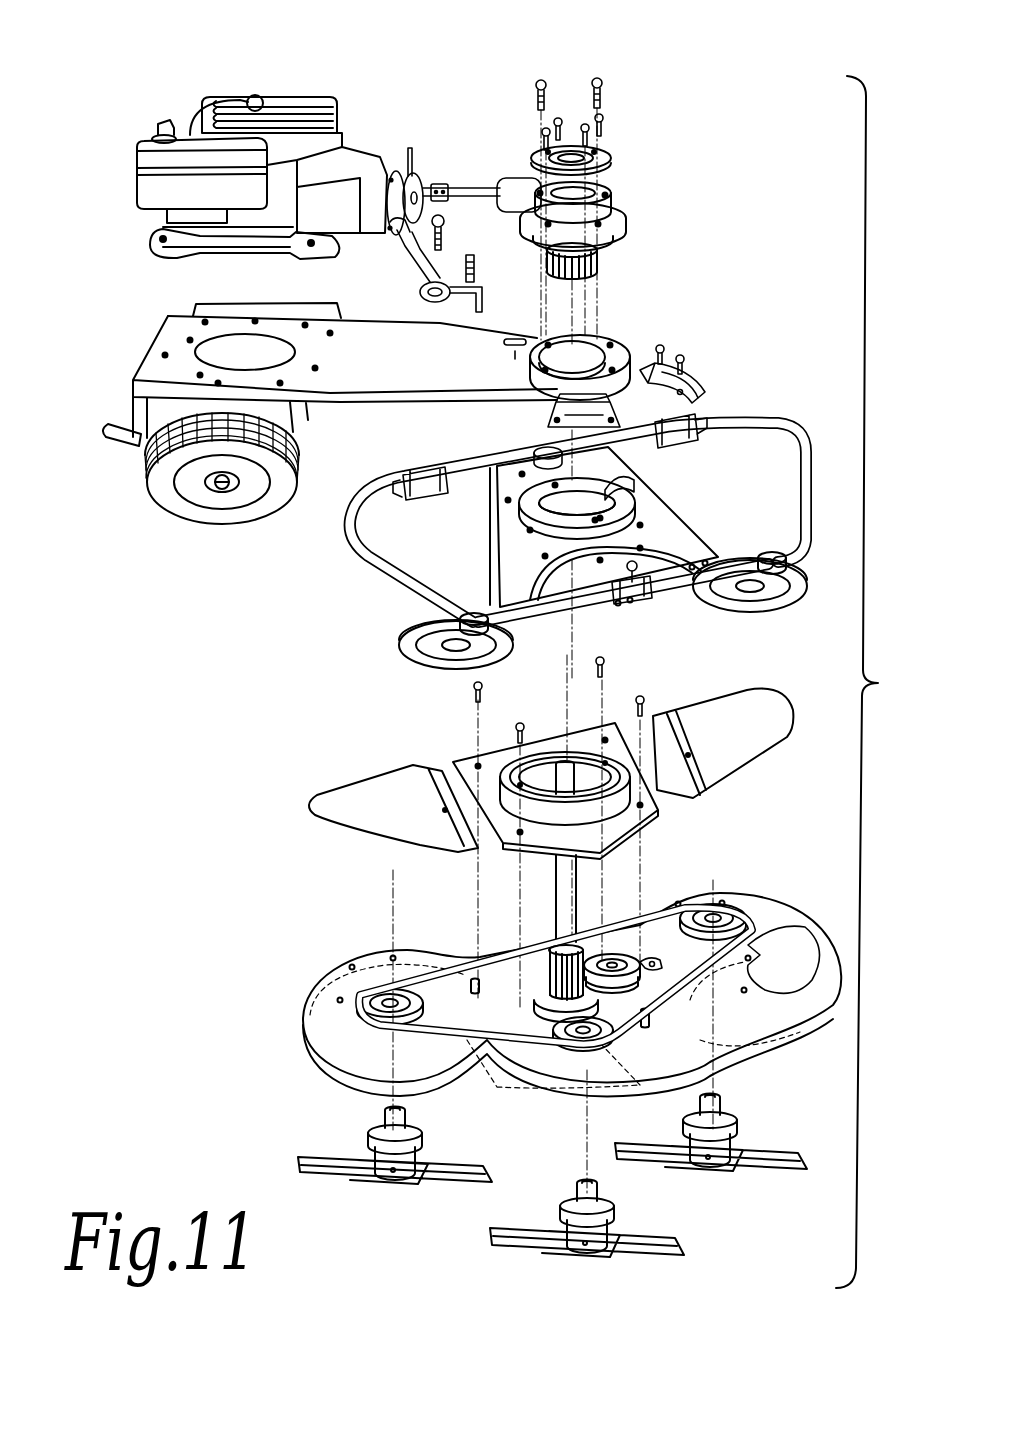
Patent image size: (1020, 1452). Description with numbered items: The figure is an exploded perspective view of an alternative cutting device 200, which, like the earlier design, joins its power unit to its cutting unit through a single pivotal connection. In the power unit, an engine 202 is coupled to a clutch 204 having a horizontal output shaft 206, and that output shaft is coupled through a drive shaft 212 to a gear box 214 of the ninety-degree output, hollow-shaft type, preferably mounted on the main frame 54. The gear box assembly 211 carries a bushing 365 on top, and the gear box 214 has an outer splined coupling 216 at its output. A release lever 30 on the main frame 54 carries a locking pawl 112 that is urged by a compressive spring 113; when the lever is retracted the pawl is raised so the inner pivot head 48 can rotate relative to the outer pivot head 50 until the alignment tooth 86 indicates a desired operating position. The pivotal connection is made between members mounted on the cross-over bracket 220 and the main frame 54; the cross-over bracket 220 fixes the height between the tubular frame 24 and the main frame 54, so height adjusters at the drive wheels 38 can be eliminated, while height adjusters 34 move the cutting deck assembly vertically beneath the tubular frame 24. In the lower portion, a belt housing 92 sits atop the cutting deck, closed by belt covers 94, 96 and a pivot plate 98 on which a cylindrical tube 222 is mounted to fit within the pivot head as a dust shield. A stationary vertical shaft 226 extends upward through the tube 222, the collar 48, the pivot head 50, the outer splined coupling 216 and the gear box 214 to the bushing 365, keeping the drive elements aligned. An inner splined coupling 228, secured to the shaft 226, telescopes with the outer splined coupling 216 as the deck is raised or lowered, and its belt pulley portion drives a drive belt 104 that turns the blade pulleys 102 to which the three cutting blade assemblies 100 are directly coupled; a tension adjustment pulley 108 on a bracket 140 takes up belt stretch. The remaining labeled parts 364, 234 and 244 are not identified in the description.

The cutting device 200 is at (662, 42).
The engine 202 is at (307, 100).
The clutch 204 is at (406, 148).
The horizontal output shaft 206 is at (431, 186).
The drive shaft 212 is at (475, 196).
The bushing 365 is at (597, 147).
The mounting plate 364 is at (613, 158).
The gear box assembly 211 is at (625, 177).
The gear box 214 is at (633, 200).
The outer splined coupling 216 is at (600, 263).
The locking pawl 112 is at (478, 300).
The release lever 30 is at (392, 247).
The main frame 54 is at (170, 350).
The compressive spring 113 is at (503, 342).
The outer pivot head 50 is at (627, 380).
The brackets 234 is at (680, 387).
The height adjusters 34 is at (410, 477).
The drive wheels 38 is at (213, 507).
The alignment tooth 86 is at (617, 473).
The inner pivot head 48 is at (640, 510).
The cross-over bracket 220 is at (663, 522).
The tubular frame 24 is at (400, 590).
The pivot plate 98 is at (463, 762).
The belt cover 94 is at (357, 817).
The belt cover 96 is at (707, 753).
The cylindrical tube 222 is at (613, 797).
The blade pulley 102 is at (740, 912).
The vertical shaft 226 is at (567, 900).
The belt housing 92 is at (787, 907).
The drive belt 104 is at (437, 990).
The inner splined coupling 228 is at (480, 952).
The deck assembly 244 is at (288, 978).
The bracket 140 is at (660, 972).
The tension adjustment pulley 108 is at (637, 993).
The cutting blade assemblies 100 is at (370, 1130).